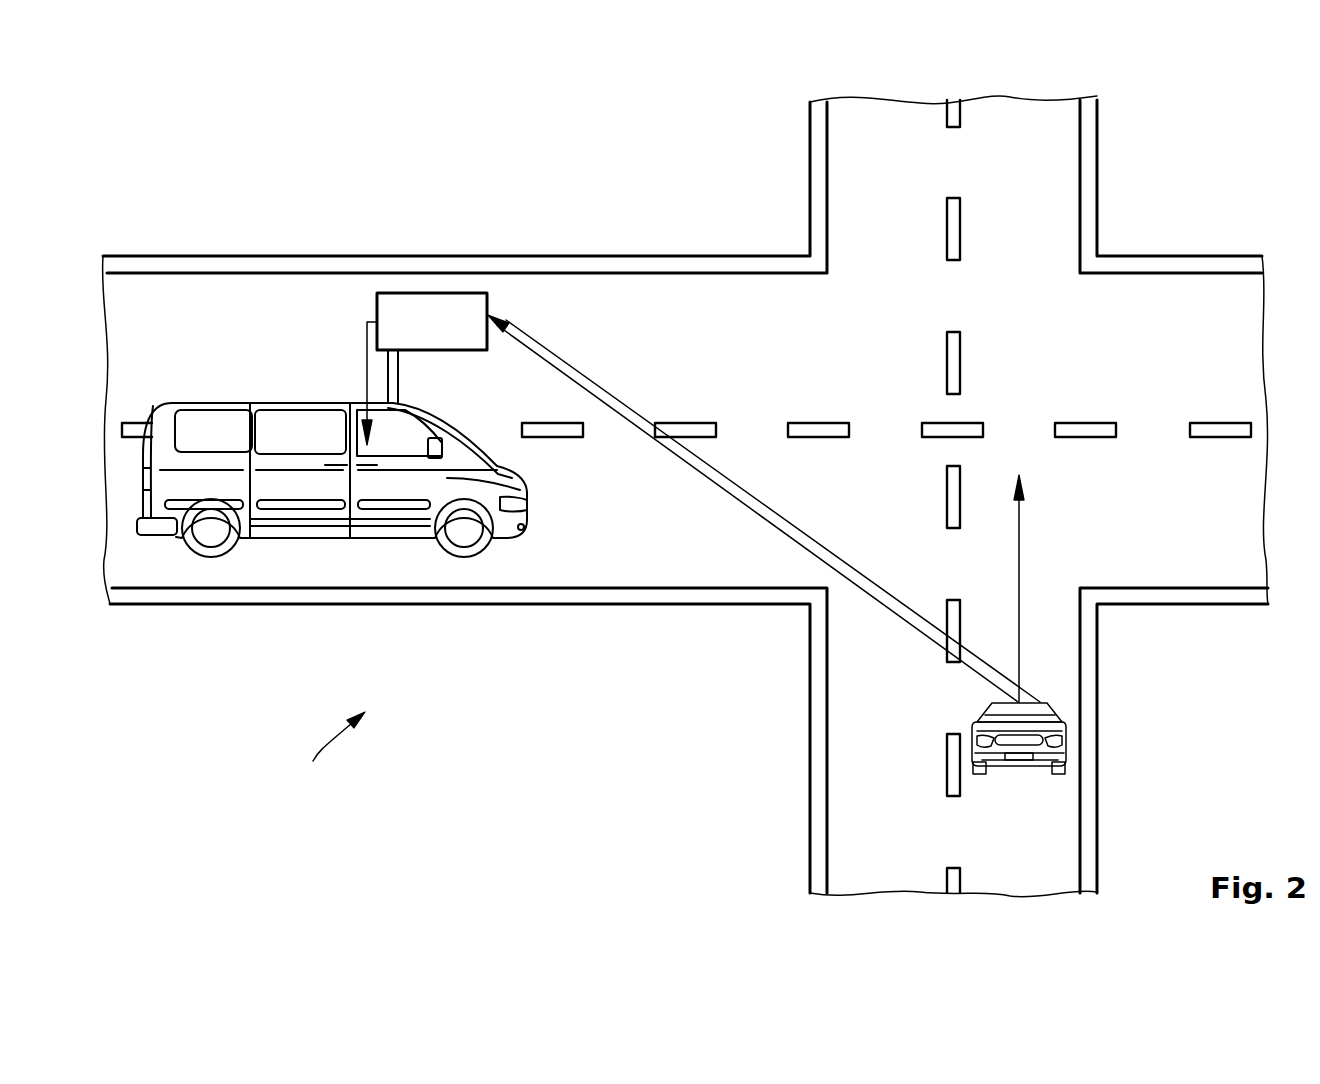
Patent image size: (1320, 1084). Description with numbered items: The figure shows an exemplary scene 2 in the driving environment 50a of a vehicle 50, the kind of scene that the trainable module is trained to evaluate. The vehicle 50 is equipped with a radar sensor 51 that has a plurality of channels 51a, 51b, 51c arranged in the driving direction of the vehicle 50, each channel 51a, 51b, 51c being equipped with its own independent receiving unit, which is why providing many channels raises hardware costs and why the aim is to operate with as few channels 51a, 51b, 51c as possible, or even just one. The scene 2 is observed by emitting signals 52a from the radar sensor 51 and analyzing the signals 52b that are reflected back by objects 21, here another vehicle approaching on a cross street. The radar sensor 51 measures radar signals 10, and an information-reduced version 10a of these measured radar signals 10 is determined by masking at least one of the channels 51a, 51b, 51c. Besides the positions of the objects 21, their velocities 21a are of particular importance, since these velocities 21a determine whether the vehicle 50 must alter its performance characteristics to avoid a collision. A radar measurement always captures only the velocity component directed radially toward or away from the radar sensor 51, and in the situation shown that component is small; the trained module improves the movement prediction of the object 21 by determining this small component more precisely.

The scene 2 is at (316, 752).
The radar signals 10 is at (310, 383).
The information-reduced version of measured radar signals 10a is at (367, 350).
The object 21 is at (1019, 775).
The velocity 21a is at (1019, 519).
The vehicle 50 is at (205, 403).
The driving environment 50a is at (316, 752).
The radar sensor 51 is at (432, 302).
The channel 51a is at (432, 321).
The channel 51b is at (432, 321).
The channel 51c is at (480, 339).
The emitted signals 52a is at (733, 497).
The reflected signals 52b is at (765, 506).